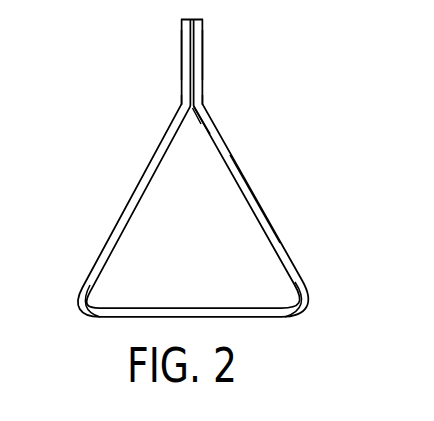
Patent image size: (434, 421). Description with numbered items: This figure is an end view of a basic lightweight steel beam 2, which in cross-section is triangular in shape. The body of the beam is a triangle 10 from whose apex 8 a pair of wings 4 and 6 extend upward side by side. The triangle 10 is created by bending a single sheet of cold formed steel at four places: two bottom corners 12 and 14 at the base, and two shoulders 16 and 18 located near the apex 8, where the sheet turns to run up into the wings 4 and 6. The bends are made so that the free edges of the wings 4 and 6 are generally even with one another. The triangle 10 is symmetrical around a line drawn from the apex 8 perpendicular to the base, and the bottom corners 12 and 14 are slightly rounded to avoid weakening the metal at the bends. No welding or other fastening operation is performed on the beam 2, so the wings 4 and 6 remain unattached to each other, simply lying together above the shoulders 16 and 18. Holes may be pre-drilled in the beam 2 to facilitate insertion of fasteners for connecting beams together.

The lightweight steel beam 2 is at (126, 176).
The wing 4 is at (182, 35).
The wing 6 is at (203, 42).
The apex 8 is at (221, 138).
The triangle 10 is at (271, 226).
The bottom corner 12 is at (74, 303).
The bottom corner 14 is at (311, 302).
The shoulder 16 is at (181, 102).
The shoulder 18 is at (203, 102).